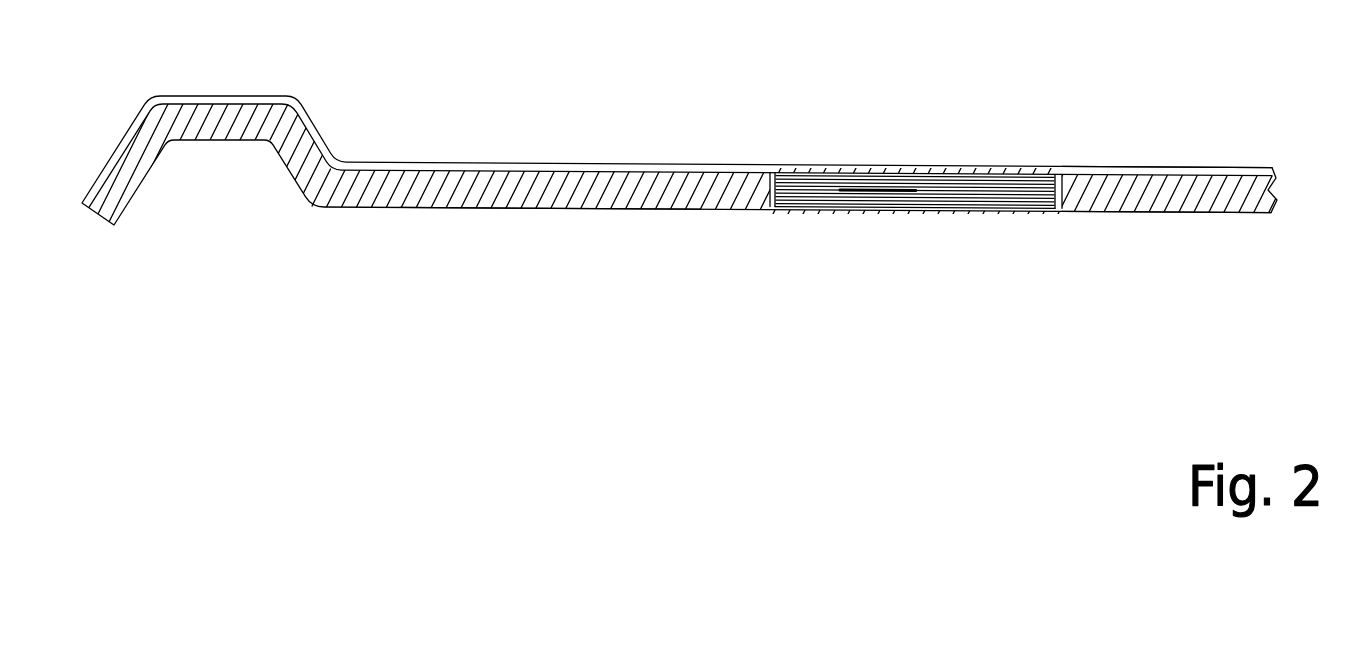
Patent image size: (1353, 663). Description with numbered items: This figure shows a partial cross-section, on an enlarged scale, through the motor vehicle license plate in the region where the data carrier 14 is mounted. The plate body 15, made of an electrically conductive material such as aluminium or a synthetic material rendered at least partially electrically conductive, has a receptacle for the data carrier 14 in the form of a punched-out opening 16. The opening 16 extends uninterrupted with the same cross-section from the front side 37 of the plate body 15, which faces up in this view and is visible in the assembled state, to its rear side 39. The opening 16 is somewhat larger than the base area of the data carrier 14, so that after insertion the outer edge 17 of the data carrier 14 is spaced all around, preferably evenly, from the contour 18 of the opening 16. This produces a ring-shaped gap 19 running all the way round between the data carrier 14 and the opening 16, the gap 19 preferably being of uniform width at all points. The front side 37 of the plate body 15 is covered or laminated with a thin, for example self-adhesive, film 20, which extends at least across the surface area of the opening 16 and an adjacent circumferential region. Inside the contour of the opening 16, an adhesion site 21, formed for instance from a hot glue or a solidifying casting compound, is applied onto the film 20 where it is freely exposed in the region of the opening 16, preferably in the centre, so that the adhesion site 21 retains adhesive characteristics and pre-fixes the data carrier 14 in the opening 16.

The front side 37 is at (705, 104).
The plate body 15 is at (455, 180).
The film 20 is at (605, 170).
The rear side 39 is at (545, 208).
The opening 16 is at (770, 163).
The outer edge 17 is at (769, 210).
The data carrier 14 is at (1017, 185).
The adhesion site 21 is at (915, 192).
The gap 19 is at (1057, 210).
The contour 18 is at (1080, 178).